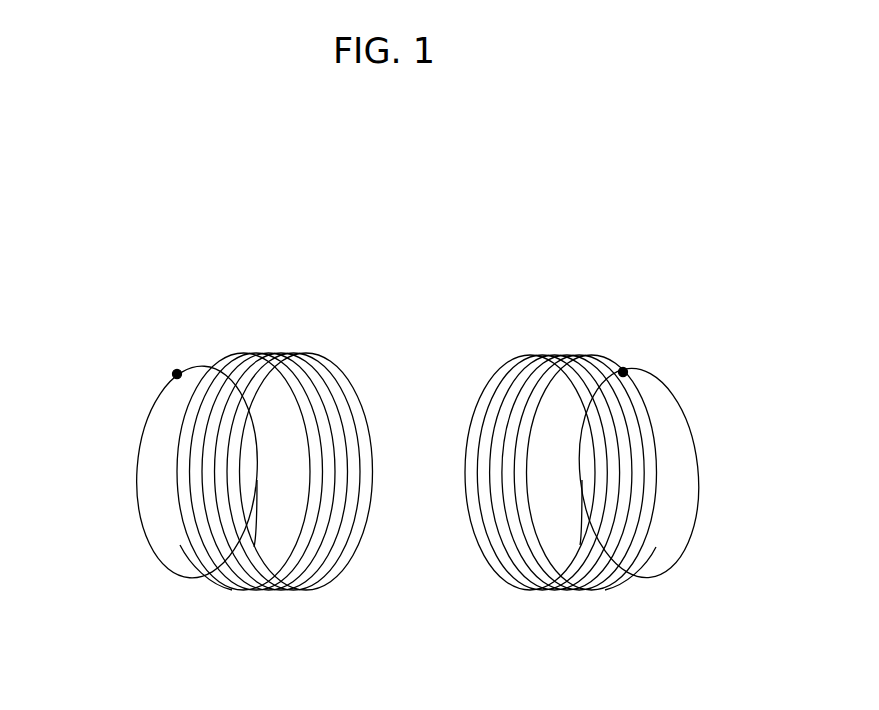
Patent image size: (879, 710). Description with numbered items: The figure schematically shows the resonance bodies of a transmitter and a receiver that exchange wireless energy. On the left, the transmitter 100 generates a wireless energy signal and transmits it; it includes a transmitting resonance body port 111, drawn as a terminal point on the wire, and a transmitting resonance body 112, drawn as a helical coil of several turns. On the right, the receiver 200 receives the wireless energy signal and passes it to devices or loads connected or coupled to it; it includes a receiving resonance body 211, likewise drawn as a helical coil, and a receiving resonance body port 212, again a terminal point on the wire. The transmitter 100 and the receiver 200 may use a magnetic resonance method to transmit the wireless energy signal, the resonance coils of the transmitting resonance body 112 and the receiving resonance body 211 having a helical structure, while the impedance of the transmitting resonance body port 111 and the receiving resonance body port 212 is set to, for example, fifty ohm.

The transmitter 100 is at (209, 407).
The transmitting resonance body port 111 is at (177, 375).
The transmitting resonance body 112 is at (283, 357).
The receiver 200 is at (625, 407).
The receiving resonance body 211 is at (555, 355).
The receiving resonance body port 212 is at (623, 372).